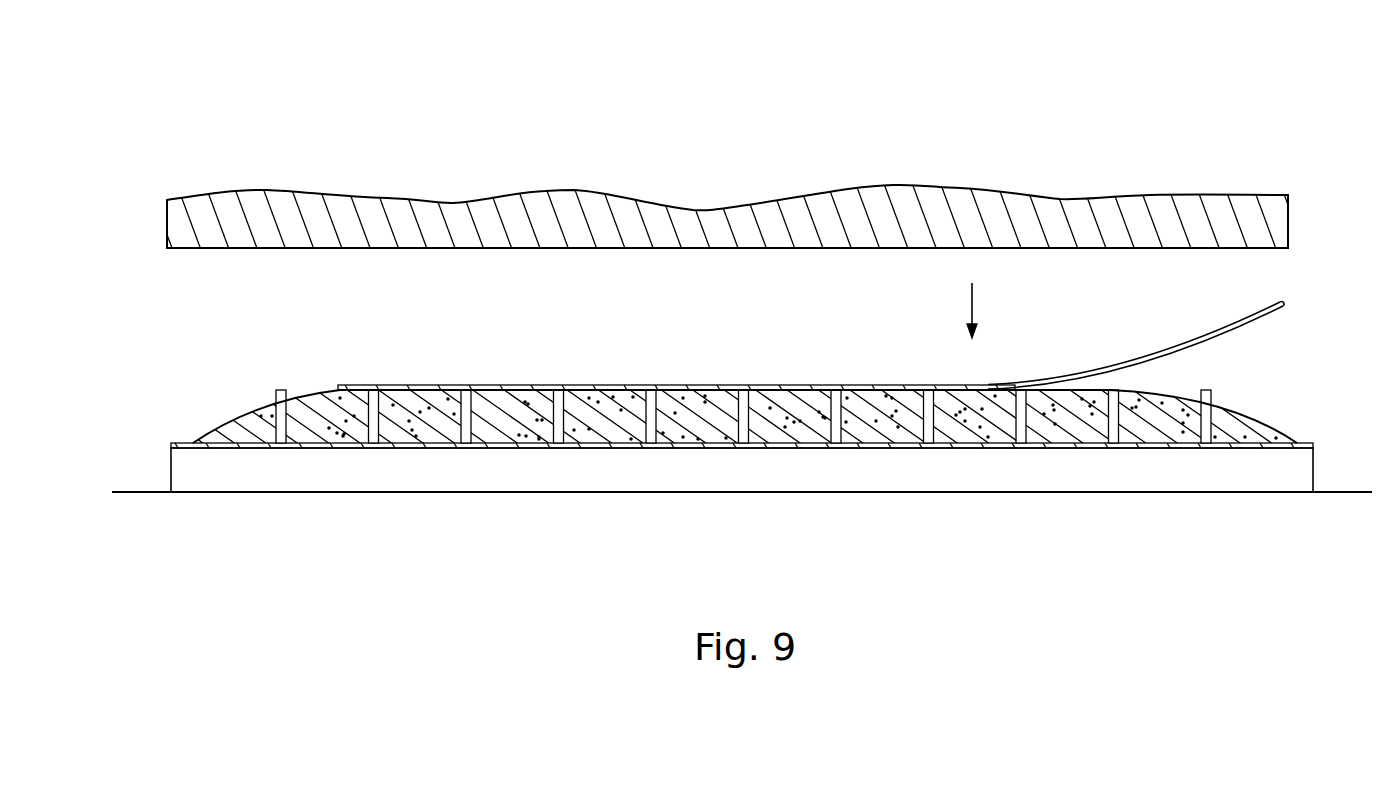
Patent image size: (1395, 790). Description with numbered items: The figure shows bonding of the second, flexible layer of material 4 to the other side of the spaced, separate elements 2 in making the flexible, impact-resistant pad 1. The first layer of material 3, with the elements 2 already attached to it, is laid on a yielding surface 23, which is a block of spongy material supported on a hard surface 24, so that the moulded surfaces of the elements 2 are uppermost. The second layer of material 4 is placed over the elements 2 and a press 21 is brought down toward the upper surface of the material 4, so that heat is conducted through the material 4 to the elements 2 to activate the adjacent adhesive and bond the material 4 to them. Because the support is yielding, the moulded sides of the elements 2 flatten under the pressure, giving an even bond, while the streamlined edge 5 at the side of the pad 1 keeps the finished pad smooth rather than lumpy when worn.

The flexible, impact-resistant pad 1 is at (692, 370).
The spaced, separate elements 2 is at (488, 418).
The first layer of flexible material 3 is at (323, 440).
The second layer of flexible material 4 is at (1246, 332).
The edge 5 is at (235, 420).
The cold press 21 is at (1190, 208).
The yielding surface 23 is at (460, 482).
The hard surface 24 is at (148, 492).